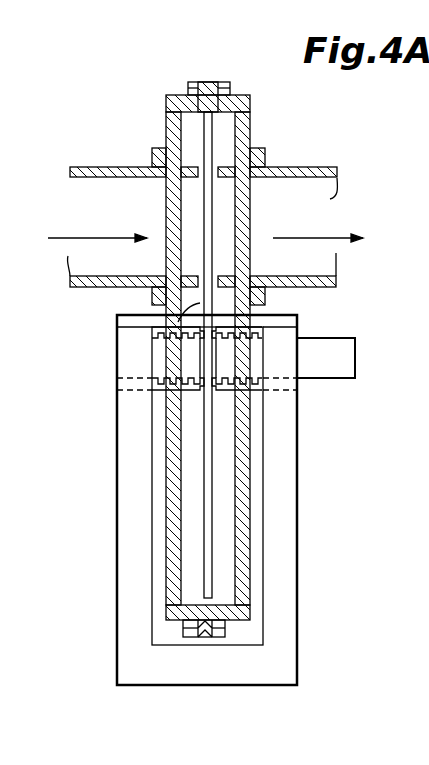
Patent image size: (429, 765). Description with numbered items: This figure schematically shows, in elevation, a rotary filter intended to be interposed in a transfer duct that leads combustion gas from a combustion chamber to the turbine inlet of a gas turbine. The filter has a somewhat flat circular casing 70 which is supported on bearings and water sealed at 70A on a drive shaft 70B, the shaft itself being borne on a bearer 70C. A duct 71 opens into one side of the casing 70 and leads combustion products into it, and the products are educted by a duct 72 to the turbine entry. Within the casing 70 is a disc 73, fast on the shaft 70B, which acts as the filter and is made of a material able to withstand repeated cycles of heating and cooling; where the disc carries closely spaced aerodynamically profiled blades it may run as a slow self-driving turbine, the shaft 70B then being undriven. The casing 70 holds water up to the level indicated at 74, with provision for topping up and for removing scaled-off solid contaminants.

The casing 70 is at (240, 497).
The bearings and water seal 70A is at (200, 378).
The drive shaft 70B is at (322, 365).
The bearer 70C is at (285, 541).
The duct 71 is at (78, 213).
The duct 72 is at (327, 218).
The disc 73 is at (196, 113).
The water level 74 is at (290, 320).